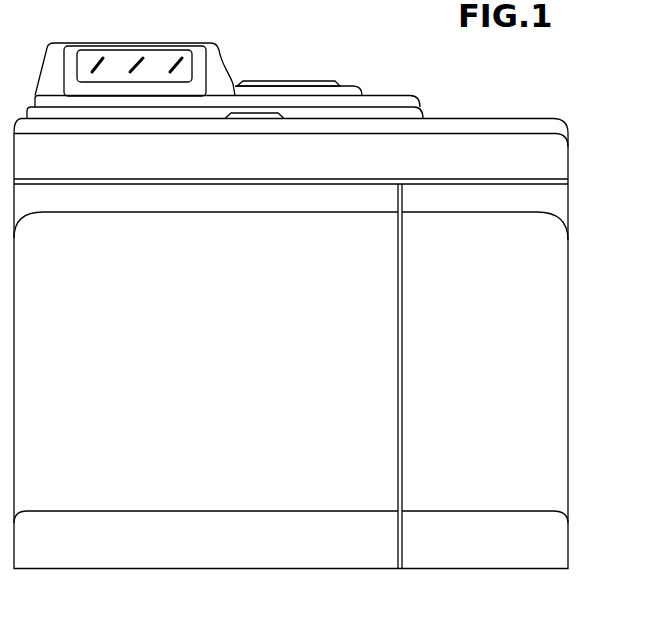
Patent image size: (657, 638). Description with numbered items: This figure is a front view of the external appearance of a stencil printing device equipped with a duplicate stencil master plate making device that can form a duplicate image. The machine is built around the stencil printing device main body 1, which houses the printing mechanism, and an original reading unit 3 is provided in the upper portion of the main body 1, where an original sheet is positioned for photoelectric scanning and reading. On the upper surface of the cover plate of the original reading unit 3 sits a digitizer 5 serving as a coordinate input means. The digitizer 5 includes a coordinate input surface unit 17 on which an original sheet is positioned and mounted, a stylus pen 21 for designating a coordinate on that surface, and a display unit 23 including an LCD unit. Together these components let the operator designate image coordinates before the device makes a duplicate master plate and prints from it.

The stencil printing device main body 1 is at (429, 160).
The original reading unit 3 is at (230, 116).
The digitizer 5 is at (214, 78).
The coordinate input surface unit 17 is at (160, 95).
The stylus pen 21 is at (287, 81).
The display unit 23 is at (113, 57).